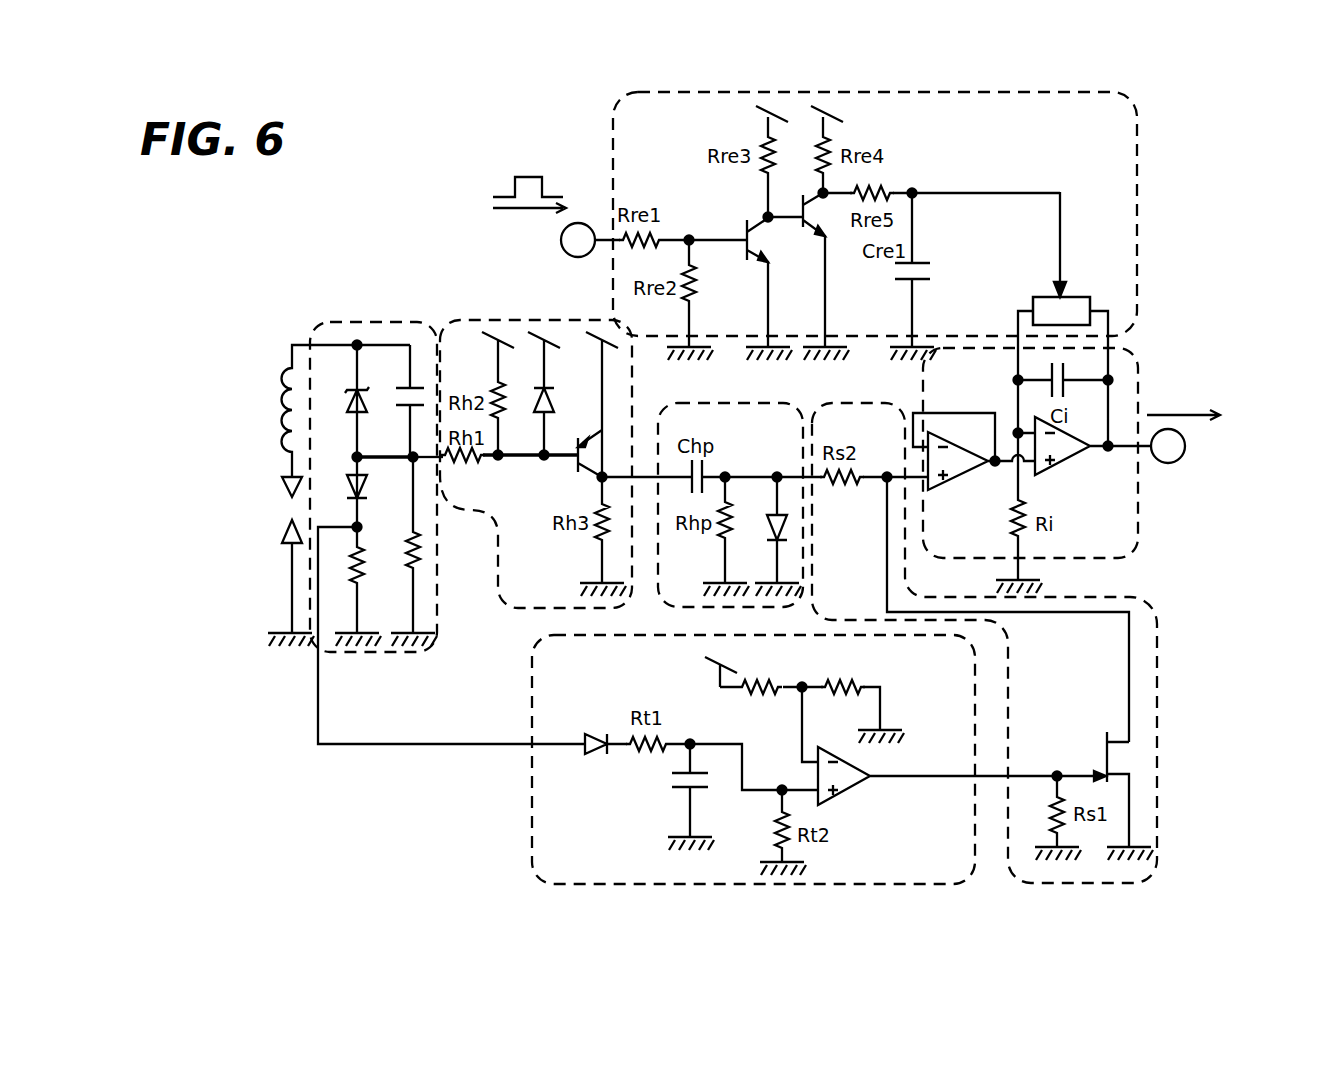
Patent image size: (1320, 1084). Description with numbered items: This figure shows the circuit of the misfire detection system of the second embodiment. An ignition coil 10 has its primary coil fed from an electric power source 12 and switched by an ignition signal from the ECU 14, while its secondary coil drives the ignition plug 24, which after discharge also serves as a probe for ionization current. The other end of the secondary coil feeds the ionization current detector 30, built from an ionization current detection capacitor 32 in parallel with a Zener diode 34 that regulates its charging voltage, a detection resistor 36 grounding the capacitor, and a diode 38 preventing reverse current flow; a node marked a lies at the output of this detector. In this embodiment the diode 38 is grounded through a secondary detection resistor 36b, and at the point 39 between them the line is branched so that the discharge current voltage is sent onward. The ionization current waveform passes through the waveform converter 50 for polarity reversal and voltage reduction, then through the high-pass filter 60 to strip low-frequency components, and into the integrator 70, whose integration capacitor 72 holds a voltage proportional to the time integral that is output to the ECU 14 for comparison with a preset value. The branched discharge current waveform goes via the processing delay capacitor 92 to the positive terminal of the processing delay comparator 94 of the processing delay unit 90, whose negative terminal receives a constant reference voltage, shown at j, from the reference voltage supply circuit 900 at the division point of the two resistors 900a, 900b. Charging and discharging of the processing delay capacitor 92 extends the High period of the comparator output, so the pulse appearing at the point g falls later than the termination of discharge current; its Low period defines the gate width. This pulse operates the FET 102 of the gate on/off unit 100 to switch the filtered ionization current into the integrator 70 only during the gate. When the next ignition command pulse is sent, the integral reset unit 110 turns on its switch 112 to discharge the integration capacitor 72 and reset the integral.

The ignition coil 10 is at (268, 417).
The electric power source 12 is at (782, 700).
The ECU 14 is at (1214, 424).
The ignition plug 24 is at (284, 508).
The ionization current detector 30 is at (375, 318).
The ionization current detection capacitor 32 is at (404, 412).
The Zener diode 34 is at (377, 378).
The detection resistor 36 is at (409, 531).
The secondary detection resistor 36b is at (364, 542).
The diode 38 is at (347, 488).
The point 39 is at (365, 534).
The waveform converter 50 is at (492, 318).
The high-pass filter 60 is at (712, 404).
The integrator 70 is at (1143, 490).
The integration capacitor 72 is at (1066, 365).
The processing delay unit 90 is at (612, 887).
The processing delay capacitor 92 is at (677, 795).
The processing delay comparator 94 is at (858, 788).
The gate on/off unit 100 is at (1158, 735).
The FET 102 is at (1127, 760).
The integral reset unit 110 is at (1137, 207).
The switch 112 is at (1090, 300).
The reference voltage supply circuit 900 is at (777, 678).
The resistor 900a is at (748, 698).
The resistor 900b is at (827, 702).
The node a is at (416, 460).
The point g is at (1057, 772).
The reference voltage point j is at (813, 679).